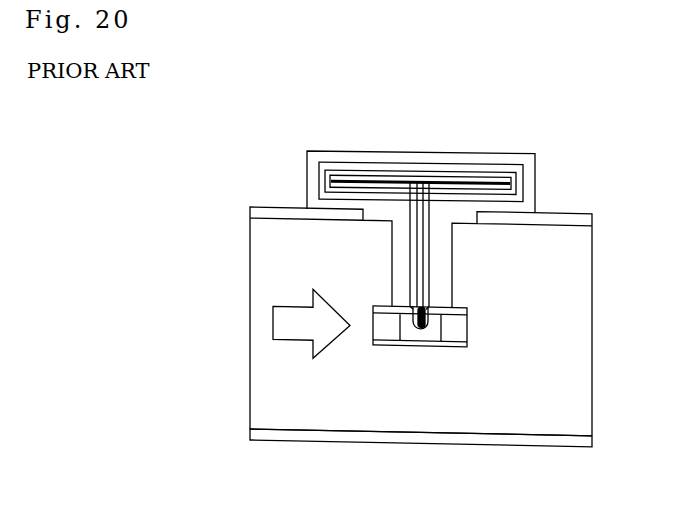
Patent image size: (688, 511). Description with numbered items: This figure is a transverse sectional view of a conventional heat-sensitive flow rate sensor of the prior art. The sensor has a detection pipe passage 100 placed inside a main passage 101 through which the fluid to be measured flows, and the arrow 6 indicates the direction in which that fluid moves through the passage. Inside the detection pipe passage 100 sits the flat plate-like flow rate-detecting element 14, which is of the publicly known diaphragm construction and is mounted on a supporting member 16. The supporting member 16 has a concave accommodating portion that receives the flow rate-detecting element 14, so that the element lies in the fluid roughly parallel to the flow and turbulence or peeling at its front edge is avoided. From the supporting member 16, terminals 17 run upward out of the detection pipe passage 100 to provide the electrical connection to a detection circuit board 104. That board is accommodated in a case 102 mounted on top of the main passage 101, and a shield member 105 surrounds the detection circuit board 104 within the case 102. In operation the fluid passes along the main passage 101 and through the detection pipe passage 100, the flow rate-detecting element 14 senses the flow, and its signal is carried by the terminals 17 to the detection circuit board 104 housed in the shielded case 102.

The air flow direction 6 is at (288, 317).
The flow rate-detecting element 14 is at (421, 343).
The supporting member 16 is at (432, 330).
The terminals 17 is at (410, 240).
The detection pipe passage 100 is at (468, 347).
The main passage 101 is at (527, 447).
The case 102 is at (468, 154).
The detection circuit board 104 is at (340, 182).
The shield member 105 is at (497, 168).